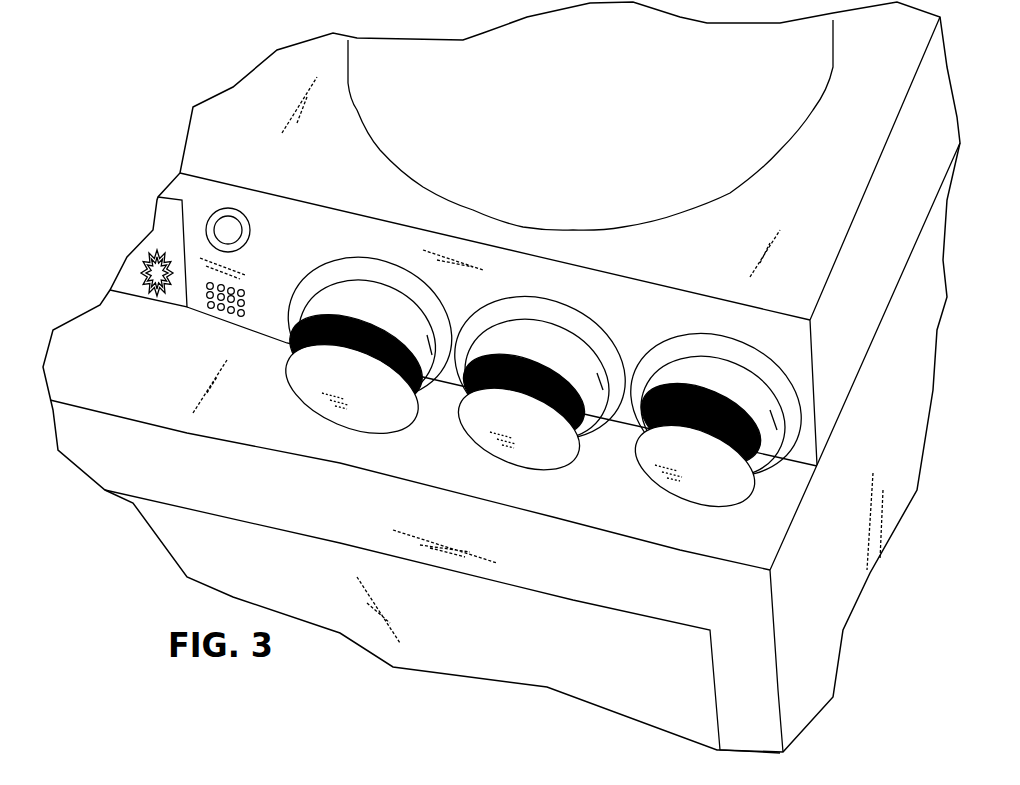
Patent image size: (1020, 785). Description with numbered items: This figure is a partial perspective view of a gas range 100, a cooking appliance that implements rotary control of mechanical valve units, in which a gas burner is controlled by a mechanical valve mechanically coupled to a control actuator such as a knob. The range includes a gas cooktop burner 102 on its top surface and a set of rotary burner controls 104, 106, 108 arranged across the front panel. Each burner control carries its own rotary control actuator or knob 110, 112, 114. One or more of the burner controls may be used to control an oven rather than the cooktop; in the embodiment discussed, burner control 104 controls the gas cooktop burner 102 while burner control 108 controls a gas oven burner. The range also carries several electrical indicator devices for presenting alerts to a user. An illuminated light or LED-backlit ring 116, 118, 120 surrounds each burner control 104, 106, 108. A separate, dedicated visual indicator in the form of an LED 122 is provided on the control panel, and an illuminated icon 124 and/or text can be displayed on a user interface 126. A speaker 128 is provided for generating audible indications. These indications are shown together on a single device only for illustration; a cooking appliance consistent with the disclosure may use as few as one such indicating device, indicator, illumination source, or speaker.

The gas range 100 is at (133, 72).
The gas cooktop burner 102 is at (362, 110).
The burner control 104 is at (511, 451).
The burner control 106 is at (703, 486).
The burner control 108 is at (325, 405).
The control actuator 110 is at (543, 460).
The control actuator 112 is at (680, 495).
The control actuator 114 is at (331, 406).
The LED-backlit ring 116 is at (490, 323).
The LED-backlit ring 118 is at (653, 360).
The LED-backlit ring 120 is at (297, 293).
The LED 122 is at (240, 217).
The illuminated icon 124 is at (140, 268).
The user interface 126 is at (163, 212).
The speaker 128 is at (230, 320).